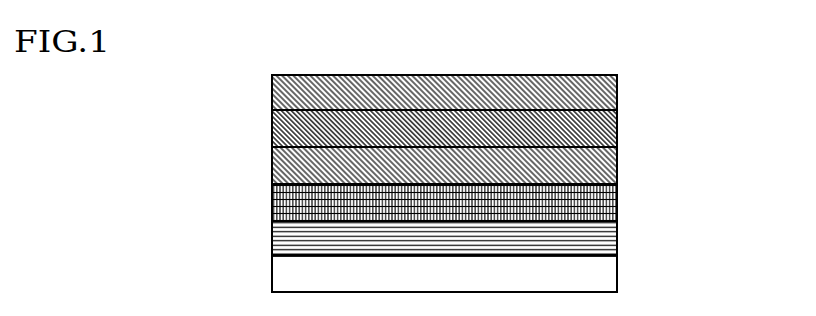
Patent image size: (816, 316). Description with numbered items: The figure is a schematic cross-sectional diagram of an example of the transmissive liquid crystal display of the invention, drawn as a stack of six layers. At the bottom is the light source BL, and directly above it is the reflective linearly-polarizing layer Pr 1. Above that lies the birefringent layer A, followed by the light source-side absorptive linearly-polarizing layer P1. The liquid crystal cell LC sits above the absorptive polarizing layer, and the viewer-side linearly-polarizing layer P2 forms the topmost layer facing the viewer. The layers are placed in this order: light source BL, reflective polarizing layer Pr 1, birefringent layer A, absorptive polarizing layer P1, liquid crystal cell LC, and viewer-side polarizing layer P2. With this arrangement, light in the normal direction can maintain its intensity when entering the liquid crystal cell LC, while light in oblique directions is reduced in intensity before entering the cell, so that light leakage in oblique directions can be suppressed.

The viewer-side linearly-polarizing layer P2 is at (593, 93).
The liquid crystal cell LC is at (597, 127).
The light source-side absorptive linearly-polarizing layer P1 is at (595, 168).
The birefringent layer A is at (617, 203).
The reflective linearly-polarizing layer Pr 1 is at (617, 238).
The light source BL is at (600, 278).